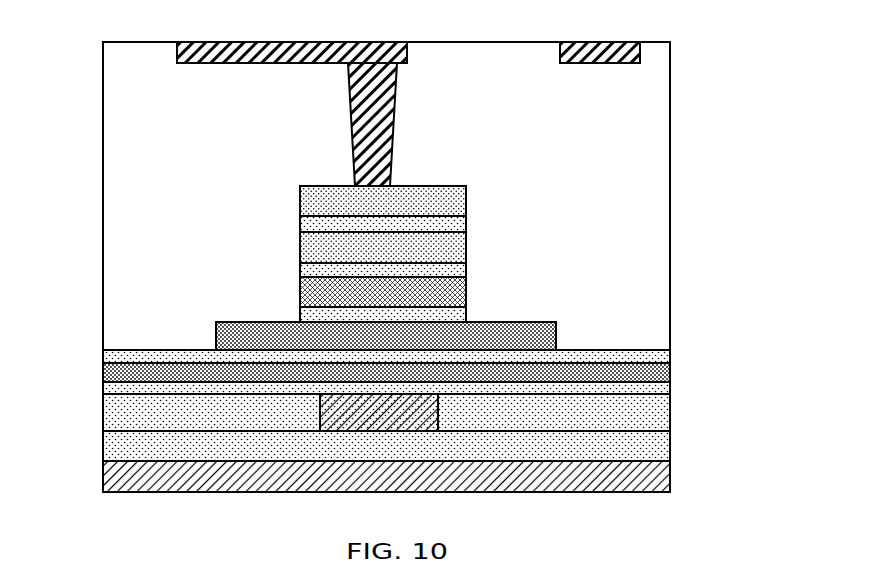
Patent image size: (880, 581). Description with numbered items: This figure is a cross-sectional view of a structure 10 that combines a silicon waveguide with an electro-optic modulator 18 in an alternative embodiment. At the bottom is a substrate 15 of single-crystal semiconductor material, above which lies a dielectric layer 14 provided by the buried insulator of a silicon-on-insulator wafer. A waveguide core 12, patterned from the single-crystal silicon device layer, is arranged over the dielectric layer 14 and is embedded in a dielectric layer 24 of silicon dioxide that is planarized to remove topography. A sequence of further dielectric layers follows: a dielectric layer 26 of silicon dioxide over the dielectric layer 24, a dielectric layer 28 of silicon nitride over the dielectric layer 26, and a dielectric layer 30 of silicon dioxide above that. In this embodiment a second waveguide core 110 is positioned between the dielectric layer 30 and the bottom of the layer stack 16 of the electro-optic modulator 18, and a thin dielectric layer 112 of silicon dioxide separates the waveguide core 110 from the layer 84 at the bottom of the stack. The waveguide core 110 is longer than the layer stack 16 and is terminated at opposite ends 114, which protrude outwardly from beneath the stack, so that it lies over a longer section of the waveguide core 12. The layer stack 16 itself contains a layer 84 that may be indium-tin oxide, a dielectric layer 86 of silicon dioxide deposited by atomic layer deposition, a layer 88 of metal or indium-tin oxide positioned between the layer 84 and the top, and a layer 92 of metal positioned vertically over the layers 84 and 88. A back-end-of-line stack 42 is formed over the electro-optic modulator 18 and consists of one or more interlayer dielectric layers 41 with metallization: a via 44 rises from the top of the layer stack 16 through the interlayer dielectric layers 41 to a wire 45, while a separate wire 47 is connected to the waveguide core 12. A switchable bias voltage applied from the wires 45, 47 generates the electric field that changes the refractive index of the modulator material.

The structure 10 is at (84, 98).
The waveguide core 12 is at (338, 400).
The dielectric layer 14 is at (655, 452).
The substrate 15 is at (655, 478).
The layer stack 16 is at (470, 193).
The electro-optic modulator 18 is at (502, 141).
The dielectric layer 24 is at (650, 404).
The dielectric layer 26 is at (140, 387).
The dielectric layer 28 is at (655, 372).
The dielectric layer 30 is at (140, 357).
The interlayer dielectric layers 41 is at (652, 238).
The back-end-of-line stack 42 is at (676, 123).
The via 44 is at (392, 104).
The wire 45 is at (409, 56).
The wire 47 is at (562, 52).
The layer 84 is at (322, 300).
The layer 86 is at (455, 272).
The layer 88 is at (455, 225).
The layer 92 is at (313, 198).
The waveguide core 110 is at (260, 333).
The dielectric layer 112 is at (453, 316).
The opposite ends 114 is at (215, 332).